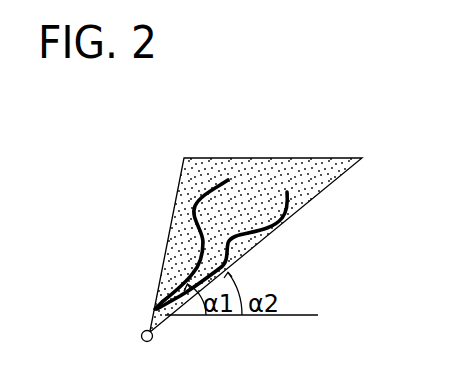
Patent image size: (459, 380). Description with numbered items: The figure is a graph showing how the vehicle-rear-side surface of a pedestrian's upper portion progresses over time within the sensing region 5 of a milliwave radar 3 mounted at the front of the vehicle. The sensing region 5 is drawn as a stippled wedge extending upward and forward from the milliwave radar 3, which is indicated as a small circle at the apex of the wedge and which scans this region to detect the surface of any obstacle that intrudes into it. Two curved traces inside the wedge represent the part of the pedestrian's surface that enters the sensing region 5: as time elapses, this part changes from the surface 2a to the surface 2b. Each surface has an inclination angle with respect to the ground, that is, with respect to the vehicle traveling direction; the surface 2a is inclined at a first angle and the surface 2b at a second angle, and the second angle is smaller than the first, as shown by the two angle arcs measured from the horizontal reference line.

The sensing region 5 is at (275, 167).
The surface 2a is at (197, 258).
The surface 2b is at (227, 248).
The milliwave radar 3 is at (141, 337).